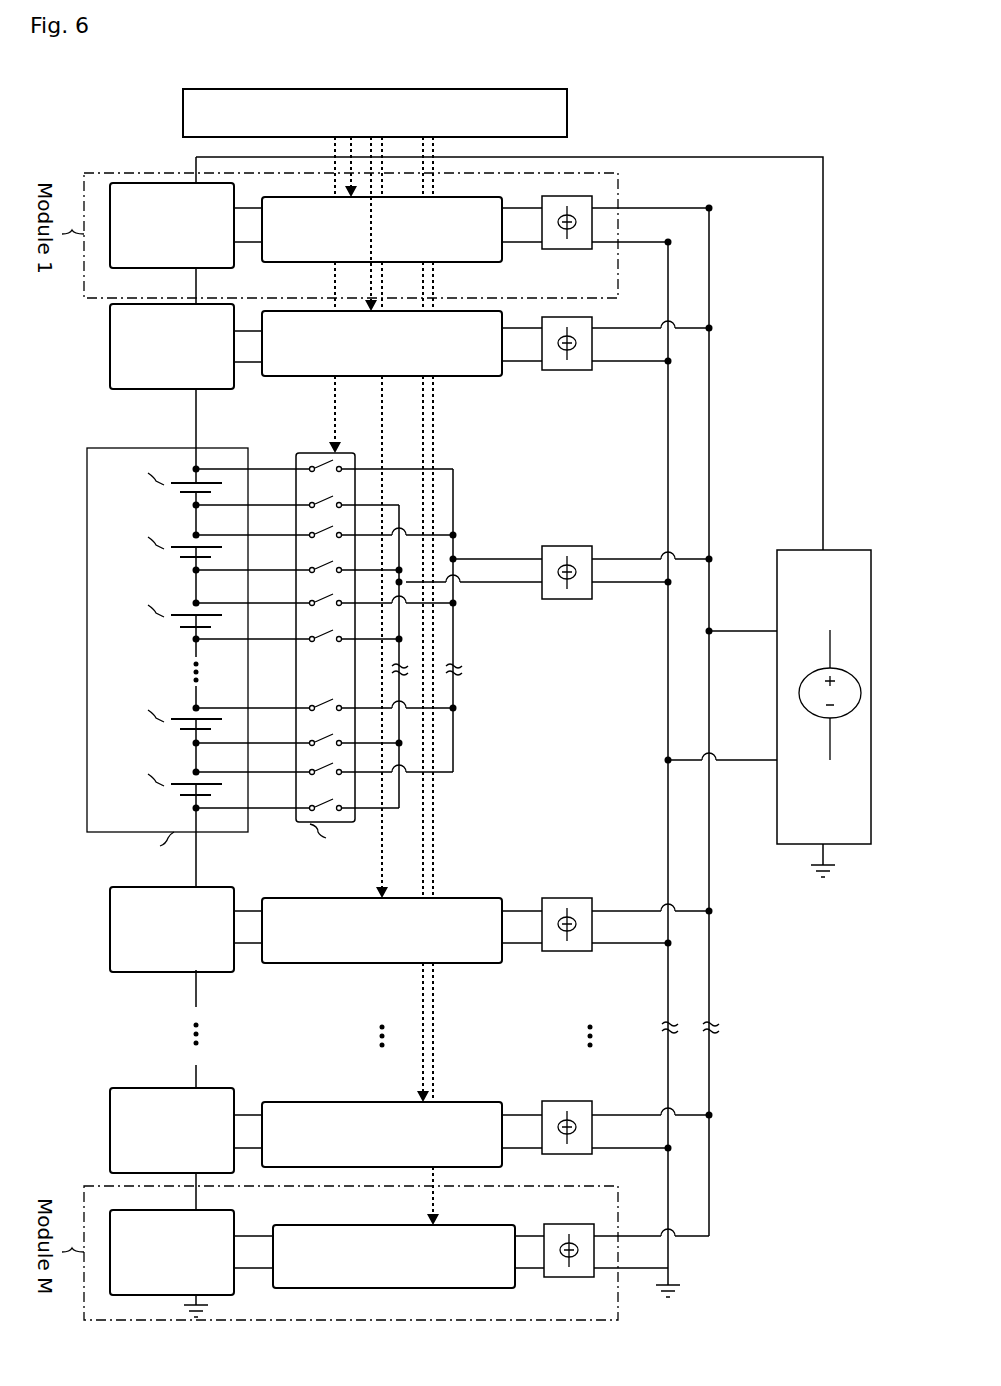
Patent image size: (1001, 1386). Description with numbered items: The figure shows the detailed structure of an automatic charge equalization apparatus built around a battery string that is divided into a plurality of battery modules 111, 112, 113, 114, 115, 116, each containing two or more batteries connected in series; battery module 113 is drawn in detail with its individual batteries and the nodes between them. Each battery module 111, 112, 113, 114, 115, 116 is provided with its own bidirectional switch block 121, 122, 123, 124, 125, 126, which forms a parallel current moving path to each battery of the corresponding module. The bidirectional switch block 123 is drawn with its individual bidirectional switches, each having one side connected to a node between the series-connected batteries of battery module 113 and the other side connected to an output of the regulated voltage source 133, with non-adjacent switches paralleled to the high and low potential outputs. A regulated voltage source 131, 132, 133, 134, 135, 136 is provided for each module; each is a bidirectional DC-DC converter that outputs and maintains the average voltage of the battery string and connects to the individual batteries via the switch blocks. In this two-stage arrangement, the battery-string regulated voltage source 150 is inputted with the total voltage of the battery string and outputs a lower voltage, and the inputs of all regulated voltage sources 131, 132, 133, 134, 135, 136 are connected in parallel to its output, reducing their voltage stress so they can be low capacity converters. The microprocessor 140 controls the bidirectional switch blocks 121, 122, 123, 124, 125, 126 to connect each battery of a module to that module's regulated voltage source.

The microprocessor 140 is at (456, 89).
The battery module 111 is at (134, 268).
The battery module 112 is at (134, 389).
The battery module 113 is at (134, 448).
The battery module 114 is at (136, 972).
The battery module 115 is at (180, 1088).
The battery module 116 is at (180, 1210).
The bidirectional switch block 121 is at (480, 262).
The bidirectional switch block 122 is at (478, 376).
The bidirectional switch block 123 is at (316, 450).
The bidirectional switch block 124 is at (372, 963).
The bidirectional switch block 125 is at (396, 1102).
The bidirectional switch block 126 is at (396, 1220).
The regulated voltage source 131 is at (560, 249).
The regulated voltage source 132 is at (560, 370).
The regulated voltage source 133 is at (560, 599).
The regulated voltage source 134 is at (574, 963).
The regulated voltage source 135 is at (560, 1154).
The regulated voltage source 136 is at (578, 1289).
The battery-string regulated voltage source 150 is at (833, 550).